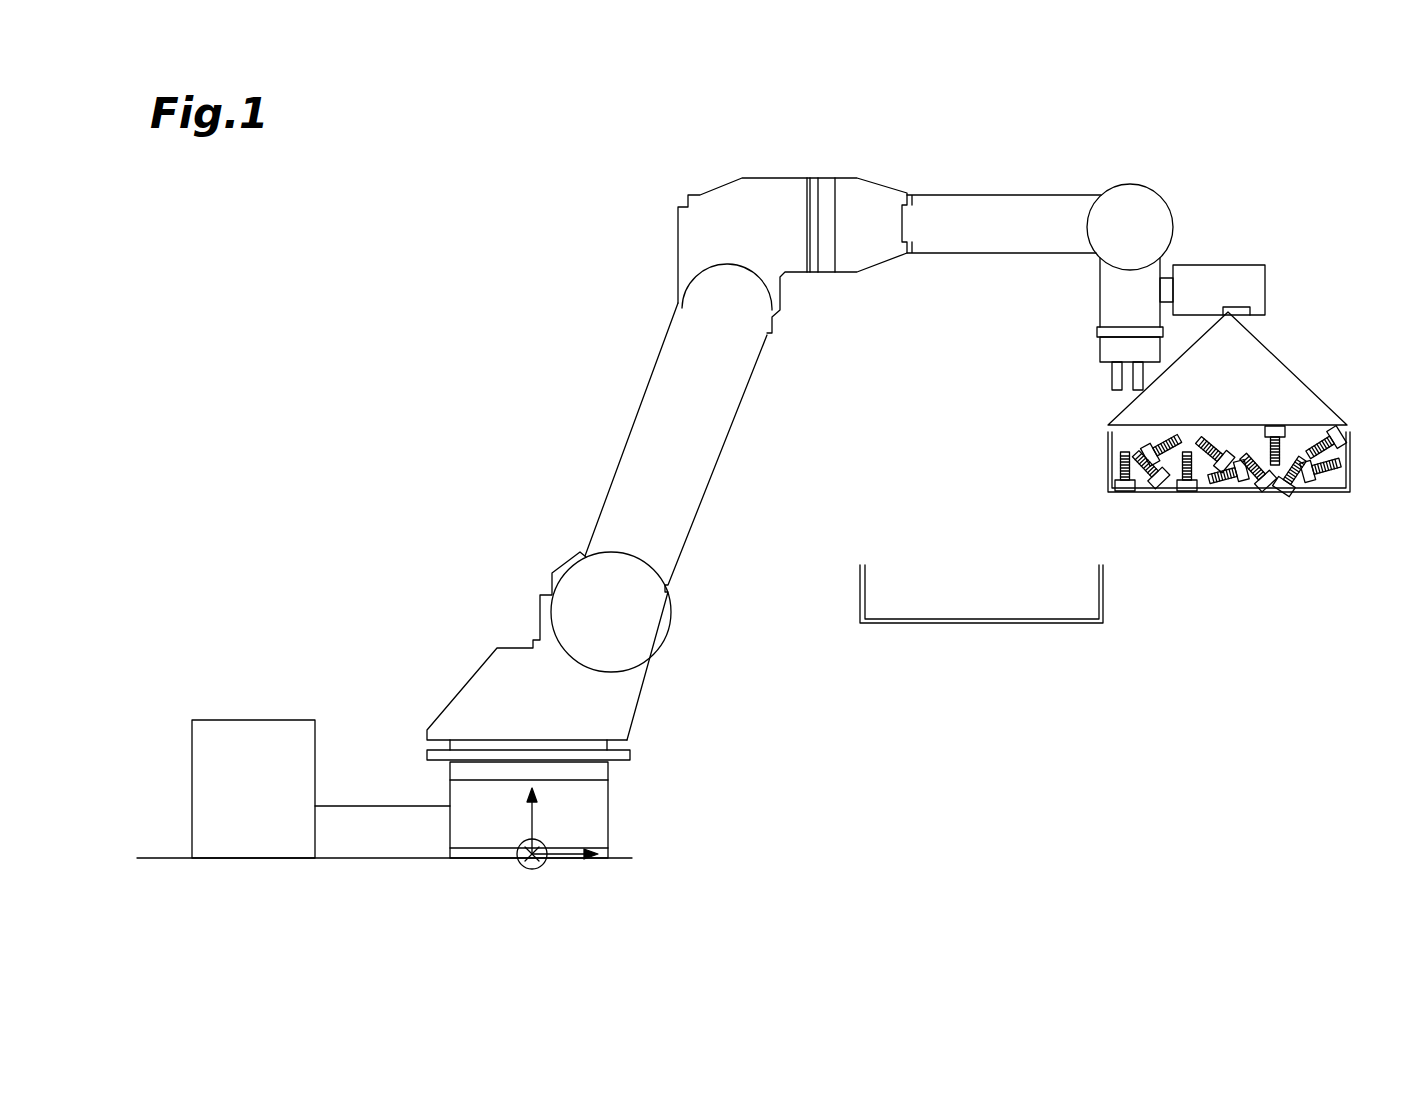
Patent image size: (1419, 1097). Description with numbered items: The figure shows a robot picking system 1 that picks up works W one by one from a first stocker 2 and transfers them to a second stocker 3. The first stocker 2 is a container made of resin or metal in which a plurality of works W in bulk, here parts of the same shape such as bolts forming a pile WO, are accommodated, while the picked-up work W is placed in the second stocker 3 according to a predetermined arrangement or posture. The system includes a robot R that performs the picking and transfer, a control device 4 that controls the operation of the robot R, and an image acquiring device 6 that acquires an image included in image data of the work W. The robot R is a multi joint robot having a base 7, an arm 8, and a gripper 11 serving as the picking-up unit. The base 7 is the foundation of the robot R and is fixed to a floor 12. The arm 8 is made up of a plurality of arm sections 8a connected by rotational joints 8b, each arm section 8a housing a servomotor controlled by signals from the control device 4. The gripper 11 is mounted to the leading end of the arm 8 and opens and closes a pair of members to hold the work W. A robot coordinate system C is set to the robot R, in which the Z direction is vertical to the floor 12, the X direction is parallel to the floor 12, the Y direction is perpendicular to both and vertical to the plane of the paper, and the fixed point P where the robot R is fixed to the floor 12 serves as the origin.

The robot picking system 1 is at (447, 182).
The first stocker 2 is at (1350, 468).
The second stocker 3 is at (1103, 600).
The control device 4 is at (250, 720).
The image acquiring device 6 is at (1243, 265).
The base 7 is at (608, 813).
The arm 8 is at (713, 477).
The arm section 8a is at (781, 185).
The joint 8b is at (890, 228).
The gripper 11 is at (1093, 357).
The floor 12 is at (630, 852).
The robot R is at (624, 328).
The work W is at (1261, 433).
The workpiece group WO is at (1338, 423).
The fixed point P is at (518, 862).
The robot coordinate system C is at (551, 860).
The X direction X is at (566, 870).
The Y direction Y is at (533, 869).
The Z direction Z is at (520, 820).